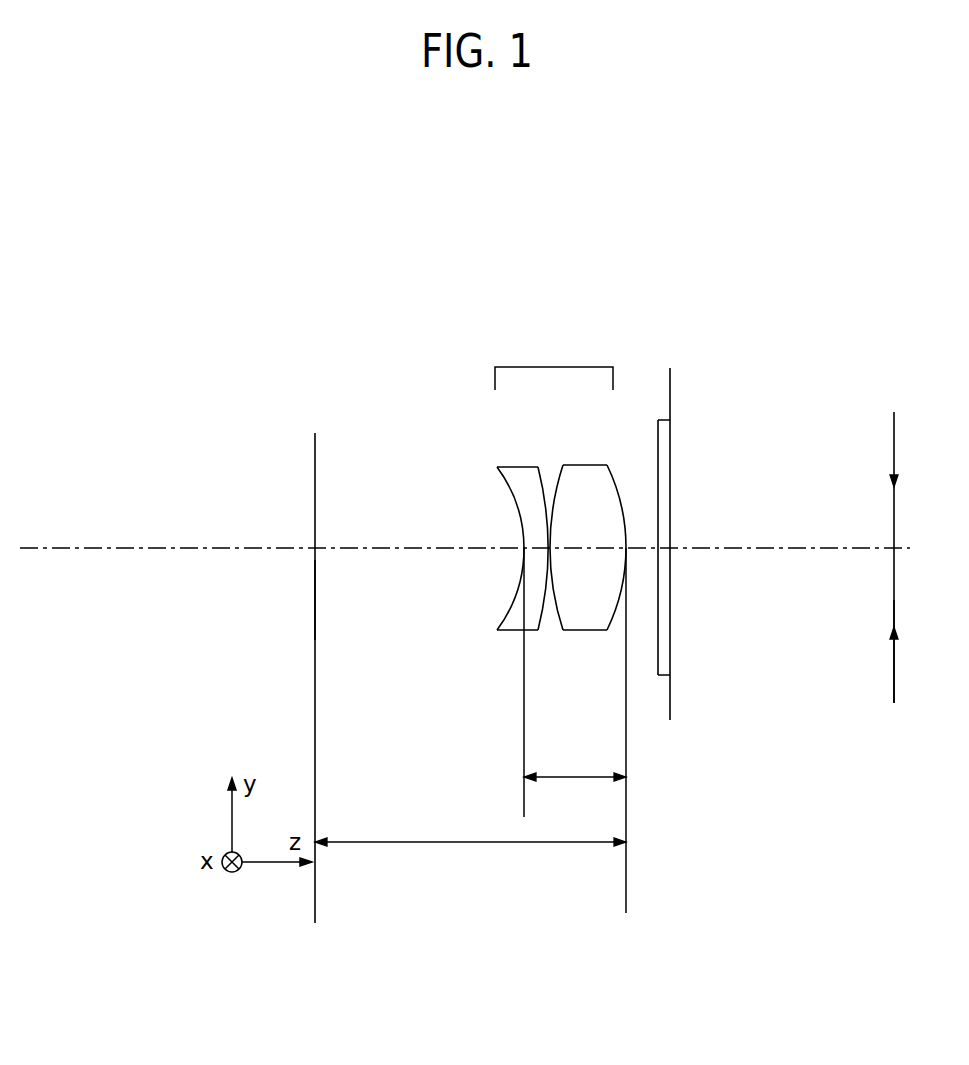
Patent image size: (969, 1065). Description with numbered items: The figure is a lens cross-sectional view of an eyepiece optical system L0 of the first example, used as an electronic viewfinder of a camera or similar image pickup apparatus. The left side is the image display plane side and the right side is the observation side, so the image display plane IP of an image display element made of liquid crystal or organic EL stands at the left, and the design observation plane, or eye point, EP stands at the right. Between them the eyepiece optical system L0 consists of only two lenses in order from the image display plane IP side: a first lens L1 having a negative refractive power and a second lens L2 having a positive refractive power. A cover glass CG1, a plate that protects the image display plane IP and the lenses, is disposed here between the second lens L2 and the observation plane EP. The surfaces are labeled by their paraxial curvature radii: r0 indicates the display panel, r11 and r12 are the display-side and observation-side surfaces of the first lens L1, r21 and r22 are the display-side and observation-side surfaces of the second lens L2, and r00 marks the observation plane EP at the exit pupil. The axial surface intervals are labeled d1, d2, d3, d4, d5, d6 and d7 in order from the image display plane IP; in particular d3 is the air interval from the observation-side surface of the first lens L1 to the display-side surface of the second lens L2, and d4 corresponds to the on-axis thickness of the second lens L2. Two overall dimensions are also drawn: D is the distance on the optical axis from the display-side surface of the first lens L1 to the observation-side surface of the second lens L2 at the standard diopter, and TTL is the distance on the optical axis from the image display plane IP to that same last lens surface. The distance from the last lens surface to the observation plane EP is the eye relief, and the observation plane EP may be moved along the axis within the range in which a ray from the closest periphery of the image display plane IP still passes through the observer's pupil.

The image display plane IP is at (315, 488).
The eyepiece optical system L0 is at (530, 525).
The first lens L1 is at (501, 538).
The second lens L2 is at (589, 553).
The cover glass CG1 is at (662, 430).
The observation plane (eye point) EP is at (912, 557).
The display panel surface r0 is at (317, 612).
The paraxial curvature radius of image-display-plane-side surface of first lens r11 is at (497, 629).
The paraxial curvature radius of observation-side surface of first lens r12 is at (538, 631).
The paraxial curvature radius of image-display-plane-side surface of second lens r21 is at (563, 631).
The paraxial curvature radius of observation-side surface of second lens r22 is at (605, 631).
The observation plane surface r00 is at (893, 655).
The axial surface interval d1 is at (414, 565).
The axial surface interval d2 is at (533, 565).
The axial interval between first and second lenses d3 is at (550, 551).
The axial surface interval d4 is at (595, 565).
The axial surface interval d5 is at (632, 551).
The axial surface interval d6 is at (675, 565).
The axial surface interval d7 is at (764, 565).
The axial distance from first lens front surface to second lens rear surface D is at (575, 730).
The axial distance from image display plane to last lens surface TTL is at (470, 827).